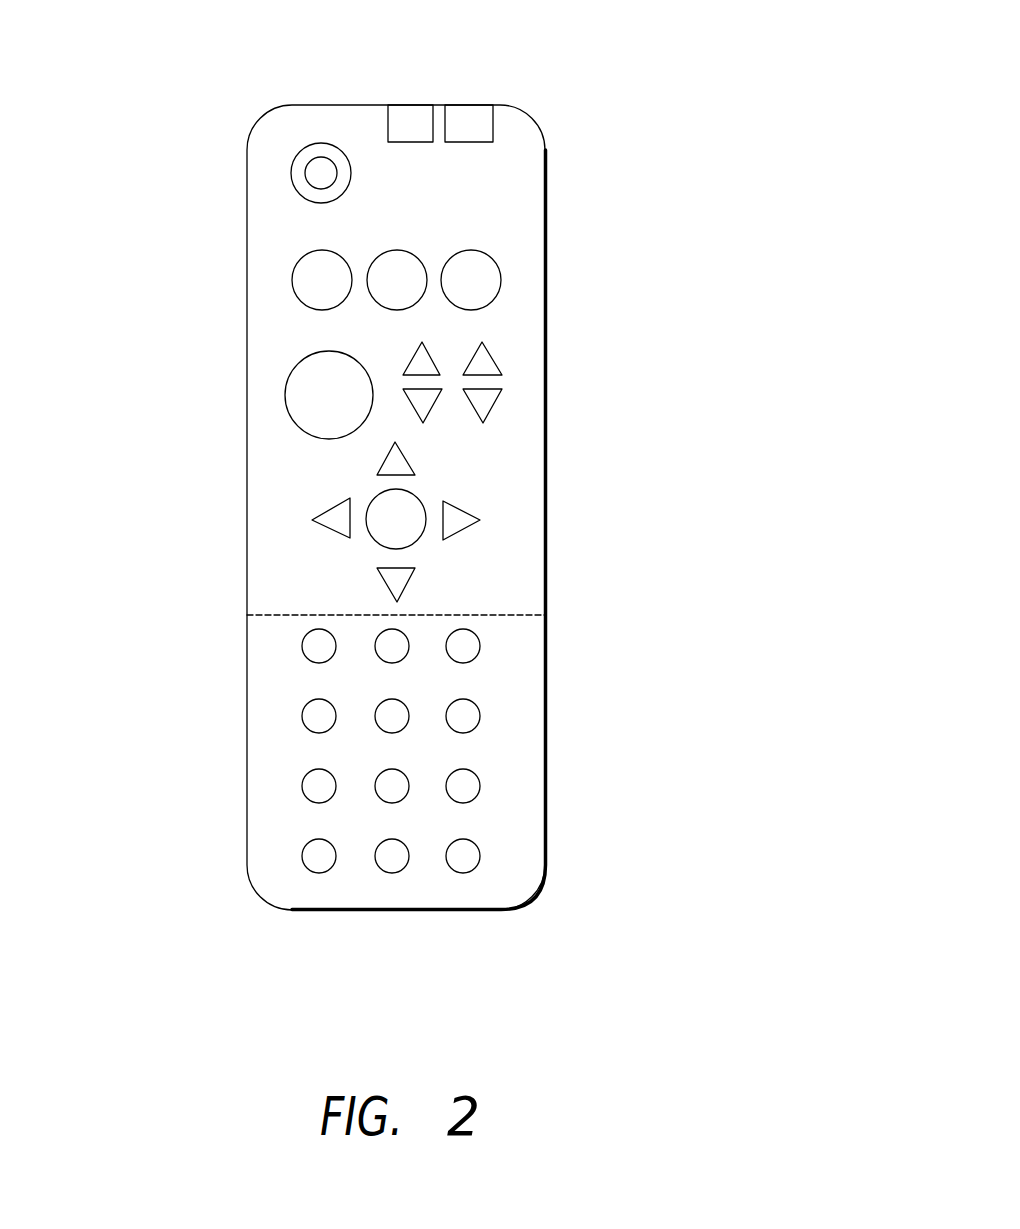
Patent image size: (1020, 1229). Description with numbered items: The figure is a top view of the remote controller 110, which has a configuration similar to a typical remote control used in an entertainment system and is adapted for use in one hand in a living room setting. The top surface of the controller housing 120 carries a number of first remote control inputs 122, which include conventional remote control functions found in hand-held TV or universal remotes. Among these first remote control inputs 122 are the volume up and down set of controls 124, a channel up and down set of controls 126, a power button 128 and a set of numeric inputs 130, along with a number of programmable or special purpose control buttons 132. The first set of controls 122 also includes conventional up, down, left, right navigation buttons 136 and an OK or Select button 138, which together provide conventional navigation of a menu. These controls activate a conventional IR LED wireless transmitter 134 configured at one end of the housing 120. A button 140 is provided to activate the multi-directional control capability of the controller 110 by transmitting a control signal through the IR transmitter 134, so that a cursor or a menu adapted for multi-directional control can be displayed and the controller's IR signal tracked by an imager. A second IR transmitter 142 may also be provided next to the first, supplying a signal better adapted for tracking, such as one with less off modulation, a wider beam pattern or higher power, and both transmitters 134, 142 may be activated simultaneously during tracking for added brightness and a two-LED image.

The remote controller 110 is at (435, 463).
The controller housing 120 is at (533, 785).
The first remote control inputs 122 is at (520, 335).
The volume up and down set of controls 124 is at (490, 405).
The channel up and down set of controls 126 is at (437, 353).
The power button 128 is at (303, 170).
The set of numeric inputs 130 is at (477, 710).
The programmable or special purpose control buttons 132 is at (295, 280).
The IR LED wireless transmitter 134 is at (412, 118).
The navigation buttons 136 is at (308, 512).
The OK or Select button 138 is at (415, 503).
The button 140 is at (300, 402).
The IR transmitter 142 is at (480, 108).